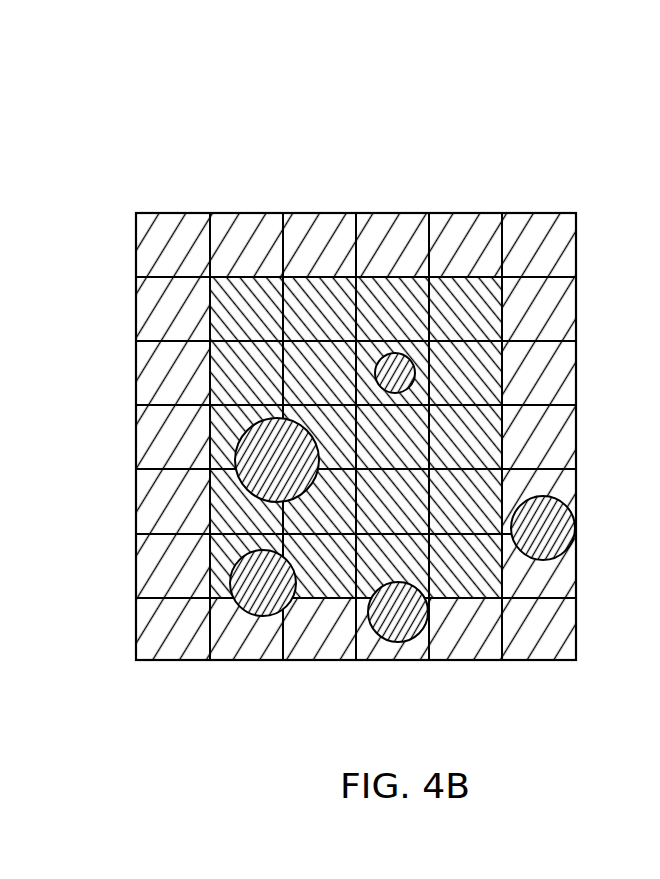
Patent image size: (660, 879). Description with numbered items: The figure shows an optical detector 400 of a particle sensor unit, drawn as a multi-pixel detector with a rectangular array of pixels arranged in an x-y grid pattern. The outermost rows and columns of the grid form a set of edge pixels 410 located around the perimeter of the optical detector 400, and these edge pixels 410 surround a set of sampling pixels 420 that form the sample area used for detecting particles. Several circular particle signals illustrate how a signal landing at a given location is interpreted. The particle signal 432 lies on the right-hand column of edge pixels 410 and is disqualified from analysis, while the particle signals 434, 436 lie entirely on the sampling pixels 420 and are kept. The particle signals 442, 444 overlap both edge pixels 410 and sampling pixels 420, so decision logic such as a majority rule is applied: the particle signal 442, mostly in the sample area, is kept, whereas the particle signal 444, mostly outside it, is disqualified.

The optical detector 400 is at (356, 115).
The edge pixels 410 is at (160, 300).
The sampling pixels 420 is at (313, 372).
The particle signal 432 is at (575, 522).
The particle signal 434 is at (236, 445).
The particle signal 436 is at (415, 372).
The particle signal 442 is at (231, 578).
The particle signal 444 is at (388, 642).